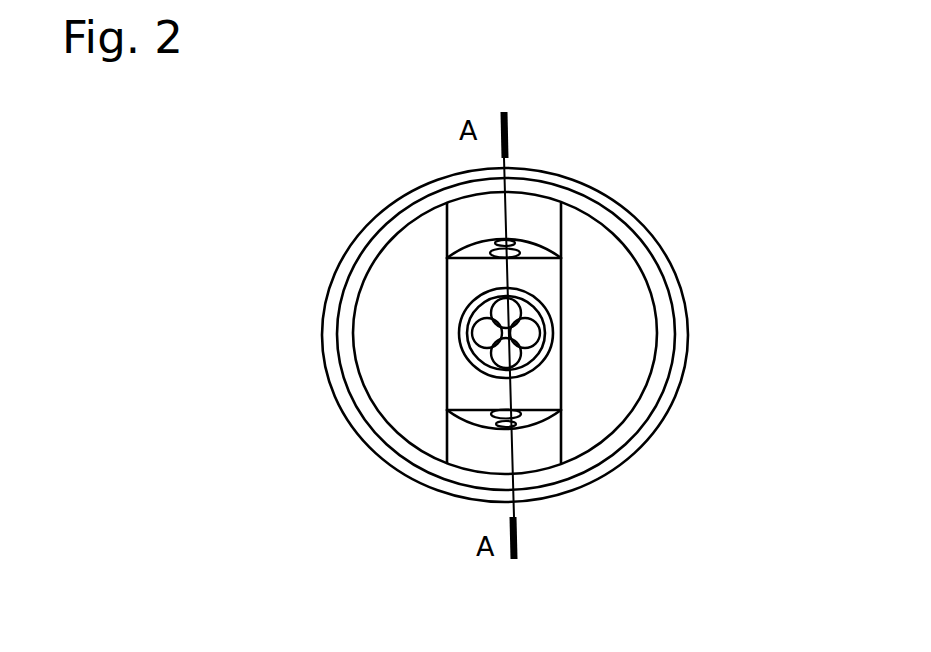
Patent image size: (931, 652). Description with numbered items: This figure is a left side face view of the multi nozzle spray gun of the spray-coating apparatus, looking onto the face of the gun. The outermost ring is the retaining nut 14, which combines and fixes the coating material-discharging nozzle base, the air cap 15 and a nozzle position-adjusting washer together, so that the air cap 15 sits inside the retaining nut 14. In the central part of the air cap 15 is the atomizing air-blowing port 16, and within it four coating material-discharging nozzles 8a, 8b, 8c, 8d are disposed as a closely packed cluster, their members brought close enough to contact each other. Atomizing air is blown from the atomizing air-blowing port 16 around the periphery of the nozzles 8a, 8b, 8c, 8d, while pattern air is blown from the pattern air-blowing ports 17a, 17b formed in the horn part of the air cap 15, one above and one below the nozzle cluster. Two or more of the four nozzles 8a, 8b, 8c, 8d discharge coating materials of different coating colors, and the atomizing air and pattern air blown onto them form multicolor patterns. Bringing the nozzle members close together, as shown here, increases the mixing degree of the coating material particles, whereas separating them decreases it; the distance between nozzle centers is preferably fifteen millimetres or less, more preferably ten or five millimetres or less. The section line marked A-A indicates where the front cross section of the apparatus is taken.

The retaining nut 14 is at (325, 297).
The air cap 15 is at (615, 297).
The atomizing air-blowing port 16 is at (483, 362).
The coating material-discharging nozzle 8a is at (490, 358).
The coating material-discharging nozzle 8b is at (518, 295).
The coating material-discharging nozzle 8c is at (485, 325).
The coating material-discharging nozzle 8d is at (538, 350).
The pattern air-blowing port 17a is at (523, 426).
The pattern air-blowing port 17b is at (510, 242).